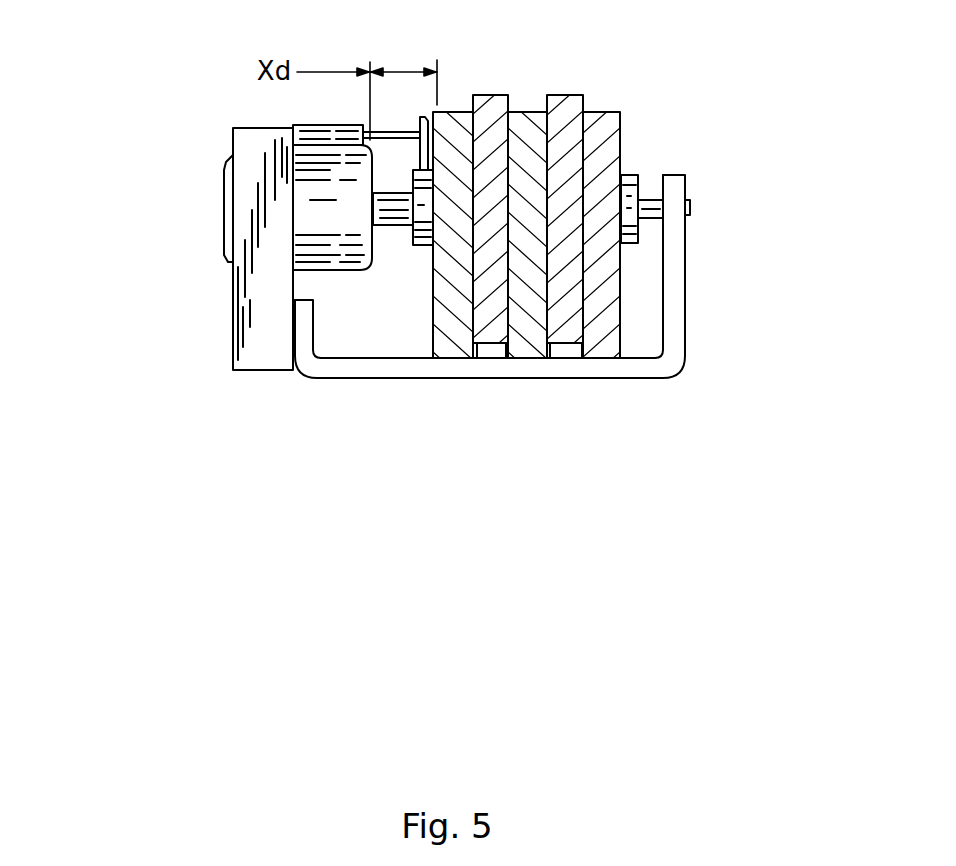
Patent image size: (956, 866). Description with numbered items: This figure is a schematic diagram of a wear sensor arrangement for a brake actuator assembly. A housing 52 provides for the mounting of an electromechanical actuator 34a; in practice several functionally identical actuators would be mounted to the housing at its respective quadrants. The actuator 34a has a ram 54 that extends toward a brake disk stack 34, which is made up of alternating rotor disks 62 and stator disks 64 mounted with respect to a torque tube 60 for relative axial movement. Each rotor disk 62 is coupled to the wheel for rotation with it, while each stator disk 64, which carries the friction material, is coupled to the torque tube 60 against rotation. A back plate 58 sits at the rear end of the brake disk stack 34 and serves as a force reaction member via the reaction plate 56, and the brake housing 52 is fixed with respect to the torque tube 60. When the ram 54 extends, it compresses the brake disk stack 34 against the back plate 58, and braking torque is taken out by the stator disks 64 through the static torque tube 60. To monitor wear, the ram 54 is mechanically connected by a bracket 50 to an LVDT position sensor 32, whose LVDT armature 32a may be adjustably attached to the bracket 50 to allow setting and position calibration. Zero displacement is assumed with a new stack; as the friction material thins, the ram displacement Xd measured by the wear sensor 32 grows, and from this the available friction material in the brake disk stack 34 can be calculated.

The LVDT position sensor 32 is at (313, 123).
The LVDT armature 32a is at (393, 130).
The brake disk stack 34 is at (541, 226).
The electromechanical actuator 34a is at (223, 208).
The bracket 50 is at (428, 117).
The housing 52 is at (233, 143).
The ram 54 is at (413, 242).
The reaction plate 56 is at (637, 177).
The back plate 58 is at (688, 290).
The torque tube 60 is at (622, 380).
The rotor disks 62 is at (478, 97).
The stator disks 64 is at (590, 358).